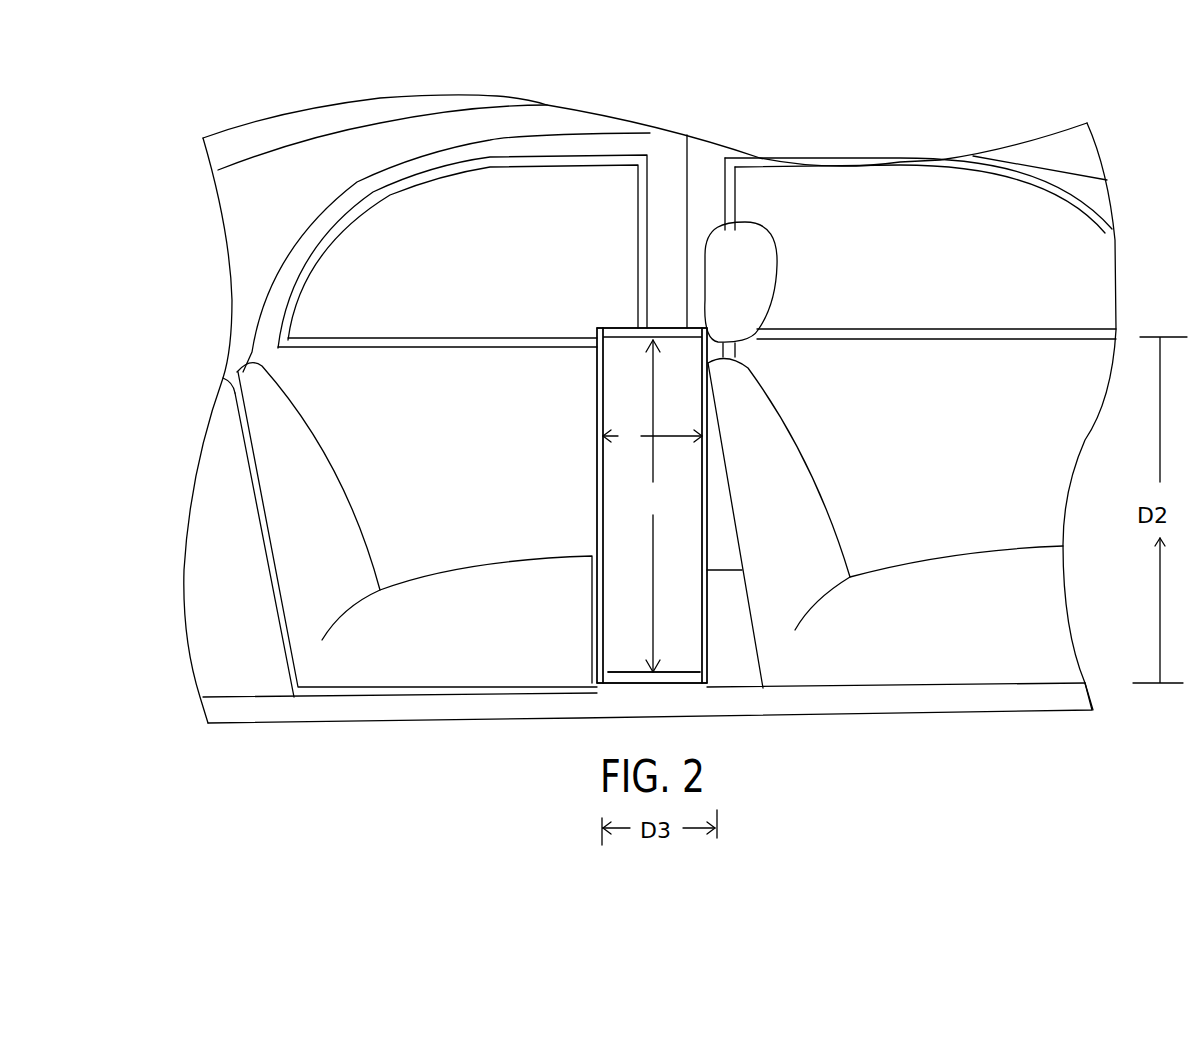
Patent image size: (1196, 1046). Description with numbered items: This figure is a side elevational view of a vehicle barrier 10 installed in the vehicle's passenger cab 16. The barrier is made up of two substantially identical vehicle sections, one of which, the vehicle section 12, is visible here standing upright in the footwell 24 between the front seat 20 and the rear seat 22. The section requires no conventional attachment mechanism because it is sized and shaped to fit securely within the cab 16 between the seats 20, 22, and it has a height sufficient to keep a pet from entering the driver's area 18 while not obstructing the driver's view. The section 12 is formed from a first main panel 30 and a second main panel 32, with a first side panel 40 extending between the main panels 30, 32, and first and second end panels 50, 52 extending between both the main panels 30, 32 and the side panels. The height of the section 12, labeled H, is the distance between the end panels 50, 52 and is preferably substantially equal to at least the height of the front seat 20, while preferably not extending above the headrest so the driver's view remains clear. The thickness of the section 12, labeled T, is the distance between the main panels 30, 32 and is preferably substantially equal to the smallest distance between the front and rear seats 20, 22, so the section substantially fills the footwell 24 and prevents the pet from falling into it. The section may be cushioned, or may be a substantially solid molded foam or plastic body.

The vehicle barrier 10 is at (560, 310).
The vehicle section 12 is at (597, 412).
The passenger cab 16 is at (663, 193).
The driver's area 18 is at (1053, 282).
The front seat 20 is at (951, 665).
The rear seat 22 is at (412, 655).
The footwell 24 is at (740, 669).
The first main panel 30 is at (707, 546).
The second main panel 32 is at (597, 537).
The first side panel 40 is at (680, 650).
The first end panel 50 is at (622, 327).
The second end panel 52 is at (632, 686).